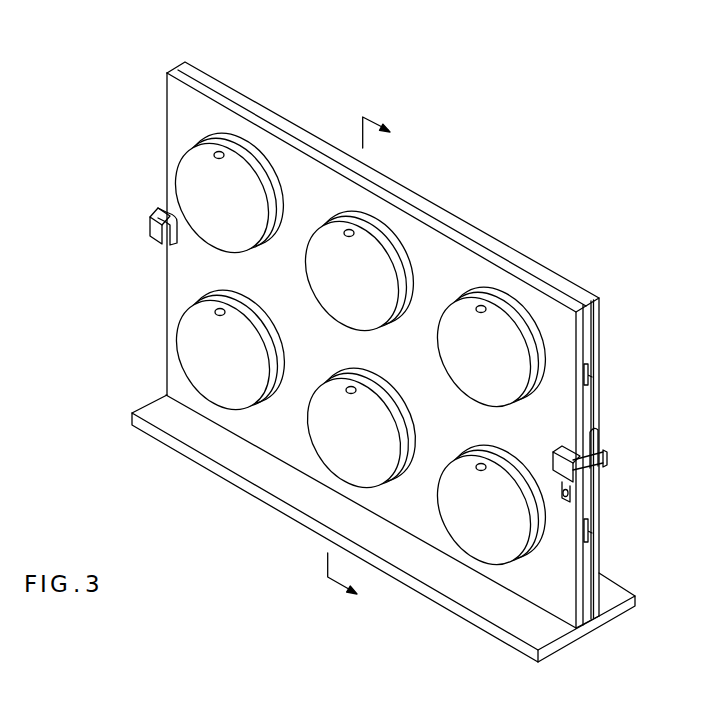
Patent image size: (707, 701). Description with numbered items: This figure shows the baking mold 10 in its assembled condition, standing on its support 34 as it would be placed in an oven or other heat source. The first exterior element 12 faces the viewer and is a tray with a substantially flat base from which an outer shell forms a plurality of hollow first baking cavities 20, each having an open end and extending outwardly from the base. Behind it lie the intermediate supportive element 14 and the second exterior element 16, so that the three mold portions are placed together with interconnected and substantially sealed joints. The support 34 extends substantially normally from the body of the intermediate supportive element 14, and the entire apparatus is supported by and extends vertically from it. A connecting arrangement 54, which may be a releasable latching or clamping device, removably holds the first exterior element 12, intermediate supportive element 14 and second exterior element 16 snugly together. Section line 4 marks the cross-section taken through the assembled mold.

The baking mold 10 is at (392, 341).
The first exterior element 12 is at (176, 98).
The intermediate supportive element 14 is at (183, 70).
The second exterior element 16 is at (599, 300).
The first baking cavity 20 is at (323, 282).
The support 34 is at (494, 615).
The connecting arrangement 54 is at (603, 462).
The section line 4- 4 is at (359, 354).